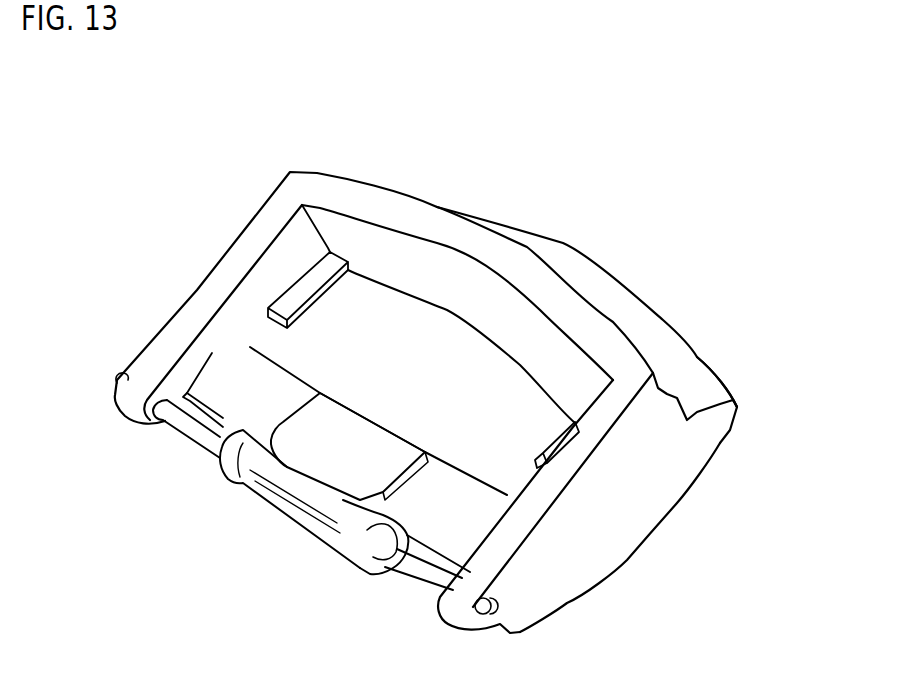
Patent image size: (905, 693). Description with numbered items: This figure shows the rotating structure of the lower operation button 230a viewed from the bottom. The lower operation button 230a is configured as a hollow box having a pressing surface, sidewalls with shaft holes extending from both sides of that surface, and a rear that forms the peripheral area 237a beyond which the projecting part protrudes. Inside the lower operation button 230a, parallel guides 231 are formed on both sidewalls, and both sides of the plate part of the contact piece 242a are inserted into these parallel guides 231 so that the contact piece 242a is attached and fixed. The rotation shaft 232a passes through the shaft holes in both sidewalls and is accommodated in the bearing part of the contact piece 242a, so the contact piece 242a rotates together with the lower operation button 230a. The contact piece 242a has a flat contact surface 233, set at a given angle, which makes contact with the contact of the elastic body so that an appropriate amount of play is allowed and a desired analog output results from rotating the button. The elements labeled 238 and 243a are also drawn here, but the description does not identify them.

The parallel guides 231 is at (303, 290).
The contact piece 242a is at (445, 355).
The peripheral area 237a is at (677, 397).
The lower operation button 230a is at (713, 430).
The side face of frame 238 is at (623, 503).
The contact surface 233 is at (323, 455).
The rotation shaft 232a is at (423, 570).
The guide plate 243a is at (177, 423).